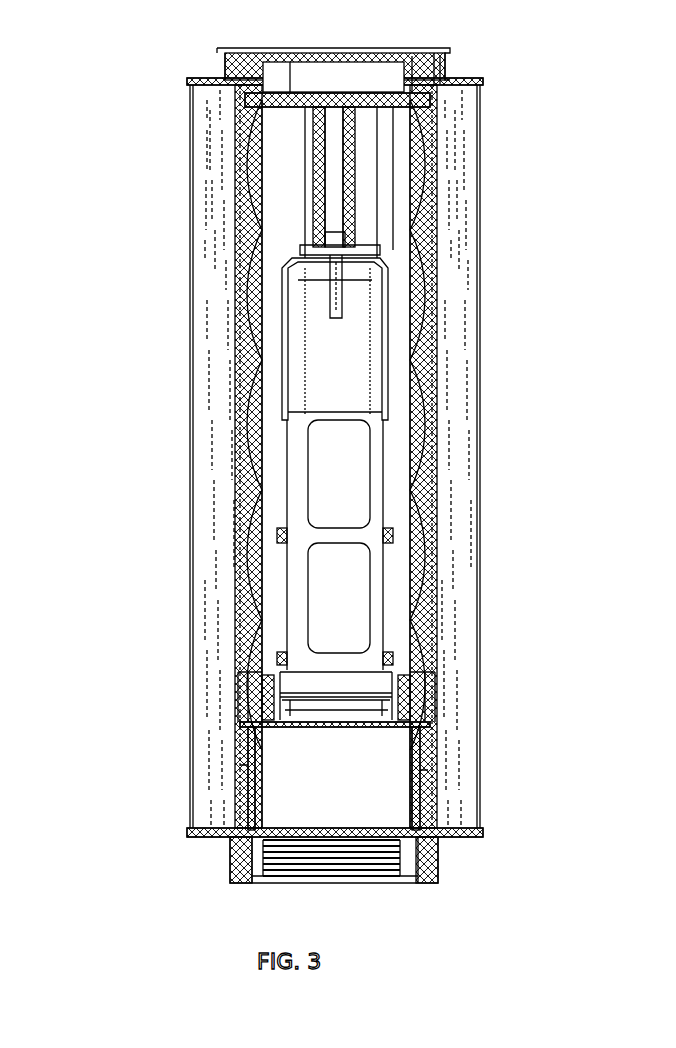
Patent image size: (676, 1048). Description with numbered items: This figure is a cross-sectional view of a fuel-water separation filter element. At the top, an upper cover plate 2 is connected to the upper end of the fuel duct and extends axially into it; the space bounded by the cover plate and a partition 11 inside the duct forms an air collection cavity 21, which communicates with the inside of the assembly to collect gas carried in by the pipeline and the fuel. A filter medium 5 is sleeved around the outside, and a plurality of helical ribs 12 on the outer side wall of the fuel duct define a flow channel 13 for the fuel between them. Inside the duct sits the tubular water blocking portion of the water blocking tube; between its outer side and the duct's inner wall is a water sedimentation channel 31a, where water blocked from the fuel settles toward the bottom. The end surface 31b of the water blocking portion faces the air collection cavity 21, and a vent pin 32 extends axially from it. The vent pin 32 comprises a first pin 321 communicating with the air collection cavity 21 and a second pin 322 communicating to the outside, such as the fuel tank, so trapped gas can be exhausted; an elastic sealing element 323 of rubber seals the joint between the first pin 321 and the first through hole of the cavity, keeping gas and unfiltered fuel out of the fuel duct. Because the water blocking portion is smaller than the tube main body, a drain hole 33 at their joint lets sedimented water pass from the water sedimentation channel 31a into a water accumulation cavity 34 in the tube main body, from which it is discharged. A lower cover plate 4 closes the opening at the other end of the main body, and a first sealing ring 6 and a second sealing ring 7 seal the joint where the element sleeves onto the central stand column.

The upper cover plate 2 is at (445, 76).
The air collection cavity 21 is at (383, 66).
The partition 11 is at (415, 92).
The filter medium 5 is at (452, 188).
The rib 12 is at (432, 400).
The flow channel 13 is at (430, 328).
The vent pin 32 is at (100, 205).
The first pin 321 is at (320, 232).
The second pin 322 is at (325, 294).
The elastic sealing element 323 is at (378, 226).
The end surface 31b is at (376, 256).
The water sedimentation channel 31a is at (400, 572).
The drain hole 33 is at (262, 694).
The second sealing ring 7 is at (372, 686).
The water accumulation cavity 34 is at (400, 780).
The lower cover plate 4 is at (462, 830).
The first sealing ring 6 is at (438, 872).